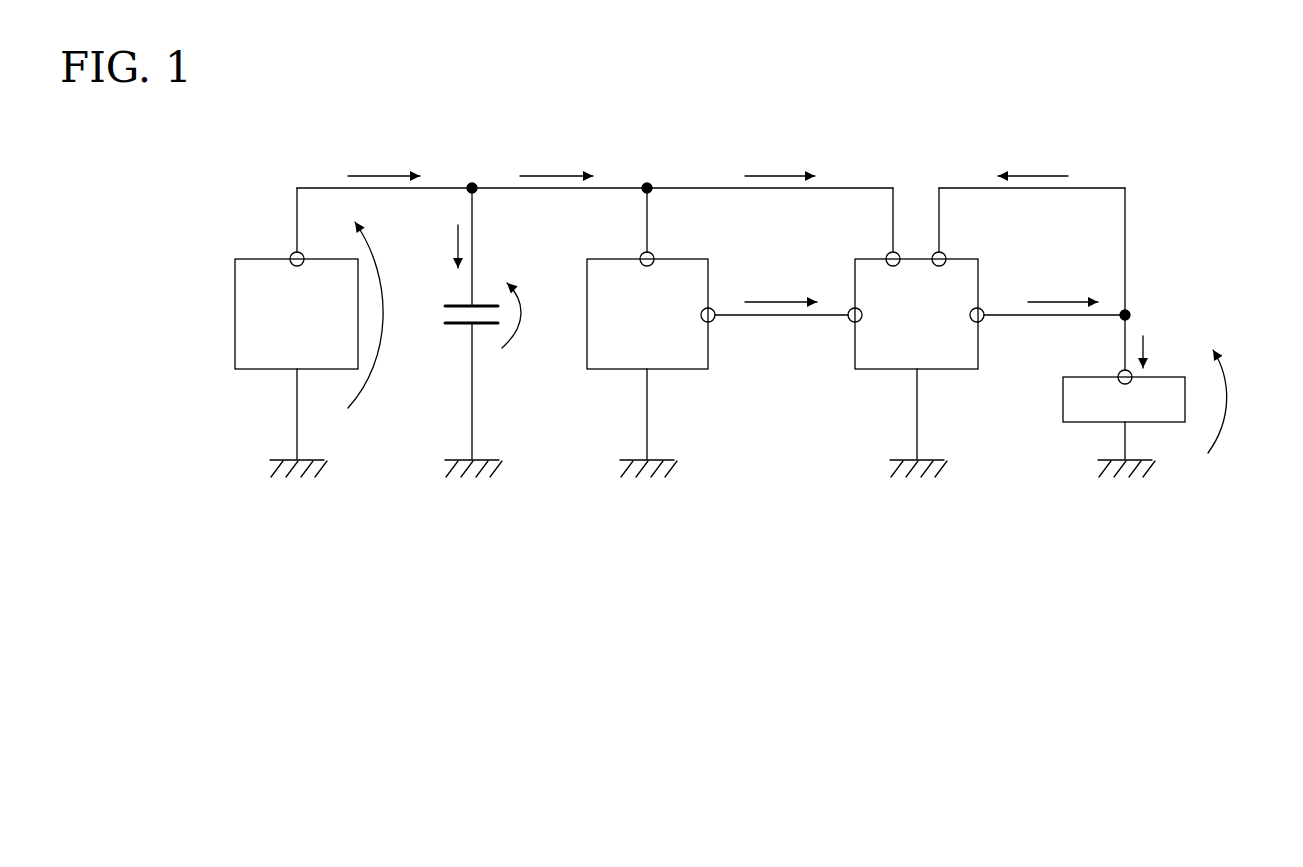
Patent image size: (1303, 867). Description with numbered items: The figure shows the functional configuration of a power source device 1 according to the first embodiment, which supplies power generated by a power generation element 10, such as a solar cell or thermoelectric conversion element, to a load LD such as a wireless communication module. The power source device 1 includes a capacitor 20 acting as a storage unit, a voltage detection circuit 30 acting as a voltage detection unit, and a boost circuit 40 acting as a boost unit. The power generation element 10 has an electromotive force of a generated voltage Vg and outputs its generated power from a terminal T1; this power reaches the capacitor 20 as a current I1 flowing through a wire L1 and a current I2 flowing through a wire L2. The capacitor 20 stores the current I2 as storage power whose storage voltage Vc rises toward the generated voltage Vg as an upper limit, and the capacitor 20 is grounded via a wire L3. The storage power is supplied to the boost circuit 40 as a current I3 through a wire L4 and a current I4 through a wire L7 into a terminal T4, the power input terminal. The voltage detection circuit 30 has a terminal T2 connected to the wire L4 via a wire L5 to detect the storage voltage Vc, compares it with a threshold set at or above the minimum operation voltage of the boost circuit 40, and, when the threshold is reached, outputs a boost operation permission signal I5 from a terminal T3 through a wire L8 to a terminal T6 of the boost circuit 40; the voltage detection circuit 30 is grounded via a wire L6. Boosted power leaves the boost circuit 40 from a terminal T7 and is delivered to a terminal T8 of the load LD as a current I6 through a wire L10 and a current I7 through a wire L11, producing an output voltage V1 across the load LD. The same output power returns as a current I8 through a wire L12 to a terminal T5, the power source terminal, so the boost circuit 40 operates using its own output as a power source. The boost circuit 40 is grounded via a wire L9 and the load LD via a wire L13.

The power source device 1 is at (1205, 116).
The power generation element 10 is at (256, 370).
The capacitor 20 is at (452, 326).
The voltage detection circuit 30 is at (604, 370).
The boost circuit 40 is at (870, 370).
The load LD is at (1070, 424).
The terminal T1 is at (291, 254).
The terminal (voltage detection terminal) T2 is at (641, 254).
The terminal (boost operation permission signal output terminal) T3 is at (714, 322).
The terminal (power input terminal) T4 is at (887, 254).
The terminal (power source terminal) T5 is at (945, 254).
The terminal (boost operation permission signal detect terminal) T6 is at (849, 322).
The terminal (boosted power output terminal) T7 is at (982, 322).
The terminal T8 is at (1118, 372).
The wire L1 is at (443, 188).
The wire L2 is at (473, 247).
The wire L3 is at (473, 397).
The wire L4 is at (617, 188).
The wire L5 is at (648, 223).
The wire L6 is at (648, 414).
The wire L7 is at (697, 188).
The wire L8 is at (783, 318).
The wire L9 is at (918, 414).
The wire L10 is at (1007, 315).
The wire L11 is at (1127, 333).
The wire L12 is at (1093, 188).
The wire L13 is at (1126, 443).
The current I1 is at (380, 175).
The current I2 is at (455, 243).
The current I3 is at (554, 175).
The current I4 is at (779, 175).
The boost operation permission signal I5 is at (778, 300).
The current I6 is at (1058, 300).
The current I7 is at (1145, 343).
The current I8 is at (1031, 175).
The generated voltage Vg is at (370, 395).
The storage voltage Vc is at (512, 338).
The output voltage V1 is at (1220, 440).